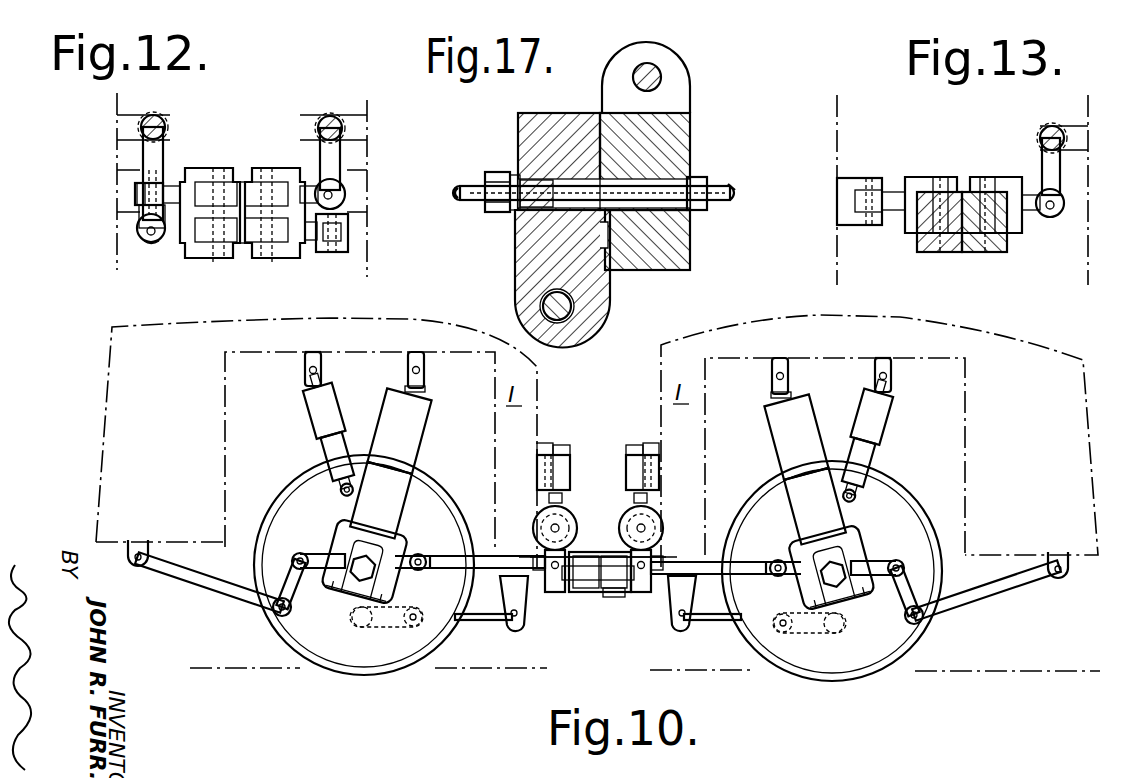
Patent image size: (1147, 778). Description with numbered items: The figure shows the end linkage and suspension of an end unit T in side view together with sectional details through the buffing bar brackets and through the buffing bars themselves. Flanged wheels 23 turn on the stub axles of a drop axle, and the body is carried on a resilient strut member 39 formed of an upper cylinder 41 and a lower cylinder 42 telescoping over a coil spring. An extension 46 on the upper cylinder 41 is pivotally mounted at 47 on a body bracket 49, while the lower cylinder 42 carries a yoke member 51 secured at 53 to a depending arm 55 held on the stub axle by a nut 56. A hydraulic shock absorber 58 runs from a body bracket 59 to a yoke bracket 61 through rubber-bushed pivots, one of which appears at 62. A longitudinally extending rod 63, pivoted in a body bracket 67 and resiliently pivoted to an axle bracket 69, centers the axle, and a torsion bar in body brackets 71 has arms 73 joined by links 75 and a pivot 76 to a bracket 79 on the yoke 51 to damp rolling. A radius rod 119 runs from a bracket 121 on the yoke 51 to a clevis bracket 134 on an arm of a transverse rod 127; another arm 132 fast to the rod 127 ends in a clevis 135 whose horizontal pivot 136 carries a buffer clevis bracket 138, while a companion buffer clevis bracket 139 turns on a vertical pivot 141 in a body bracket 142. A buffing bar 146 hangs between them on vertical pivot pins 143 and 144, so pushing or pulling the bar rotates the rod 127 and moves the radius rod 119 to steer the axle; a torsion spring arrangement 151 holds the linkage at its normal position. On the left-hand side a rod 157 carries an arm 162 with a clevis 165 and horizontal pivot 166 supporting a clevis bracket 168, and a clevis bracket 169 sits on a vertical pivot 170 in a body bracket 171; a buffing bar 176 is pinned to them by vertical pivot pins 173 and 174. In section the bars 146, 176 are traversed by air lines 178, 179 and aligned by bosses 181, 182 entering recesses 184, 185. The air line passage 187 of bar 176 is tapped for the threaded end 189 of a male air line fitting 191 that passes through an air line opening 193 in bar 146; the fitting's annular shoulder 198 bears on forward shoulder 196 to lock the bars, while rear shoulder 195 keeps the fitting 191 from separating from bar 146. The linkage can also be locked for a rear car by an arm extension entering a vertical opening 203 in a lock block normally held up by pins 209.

In FIG. 10, the flanged wheels 23 is at (447, 637).
In FIG. 10, the resilient strut member 39 is at (429, 439).
In FIG. 10, the upper cylinder 41 is at (425, 410).
In FIG. 10, the lower strut cylinder 42 is at (392, 512).
In FIG. 10, the extension 46 is at (408, 388).
In FIG. 10, the pivotal mounting 47 is at (424, 372).
In FIG. 10, the body bracket 49 is at (425, 348).
In FIG. 10, the yoke member 51 is at (353, 541).
In FIG. 10, the yoke-to-arm connection 53 is at (790, 616).
In FIG. 10, the depending arm 55 is at (360, 606).
In FIG. 10, the nut 56 is at (378, 574).
In FIG. 10, the hydraulic shock absorber 58 is at (306, 440).
In FIG. 10, the body bracket 59 is at (312, 352).
In FIG. 10, the yoke bracket 61 is at (343, 496).
In FIG. 10, the pivot pin 62 is at (305, 378).
In FIG. 10, the longitudinally extending rod 63 is at (356, 482).
In FIG. 10, the bracket 67 is at (520, 632).
In FIG. 10, the longitudinally extending bracket 69 is at (137, 568).
In FIG. 10, the body bracket 71 is at (140, 540).
In FIG. 10, the longitudinally extending arms 73 is at (207, 583).
In FIG. 10, the links 75 is at (291, 598).
In FIG. 10, the transverse horizontal pivot 76 is at (276, 614).
In FIG. 10, the horizontally extending bracket 79 is at (302, 554).
In FIG. 10, the radius rod 119 is at (480, 556).
In FIG. 10, the bracket 121 is at (420, 556).
In FIG. 12, the transversely extending horizontal rod 127 is at (159, 118).
In FIG. 10, the transversely extending horizontal rod 127 is at (548, 524).
In FIG. 12, the downwardly extending arm 132 is at (163, 150).
In FIG. 10, the clevis bracket 134 is at (532, 572).
In FIG. 12, the clevis 135 is at (138, 222).
In FIG. 10, the clevis 135 is at (550, 592).
In FIG. 12, the horizontal pivot 136 is at (150, 245).
In FIG. 12, the buffer clevis bracket 138 is at (195, 258).
In FIG. 10, the buffer clevis bracket 138 is at (578, 593).
In FIG. 12, the buffer clevis bracket 139 is at (196, 170).
In FIG. 13, the buffer clevis bracket 139 is at (915, 177).
In FIG. 12, the vertical pivot 141 is at (140, 183).
In FIG. 13, the vertical pivot 141 is at (868, 190).
In FIG. 12, the bracket 142 is at (135, 194).
In FIG. 13, the bracket 142 is at (850, 178).
In FIG. 12, the vertical pivot pin 143 is at (213, 262).
In FIG. 17, the vertical pivot pin 143 is at (540, 300).
In FIG. 12, the vertical pivot pin 144 is at (224, 168).
In FIG. 13, the vertical pivot pin 144 is at (943, 177).
In FIG. 12, the buffing bar 146 is at (228, 243).
In FIG. 17, the buffing bar 146 is at (530, 248).
In FIG. 13, the buffing bar 146 is at (935, 252).
In FIG. 10, the buffing bar 146 is at (590, 592).
In FIG. 10, the torsion spring arrangement 151 is at (562, 505).
In FIG. 12, the rod 157 is at (332, 117).
In FIG. 13, the rod 157 is at (1054, 126).
In FIG. 10, the rod 157 is at (650, 525).
In FIG. 12, the downwardly extending arm 162 is at (330, 152).
In FIG. 13, the downwardly extending arm 162 is at (1042, 160).
In FIG. 12, the clevis 165 is at (340, 186).
In FIG. 13, the clevis 165 is at (1064, 200).
In FIG. 10, the clevis 165 is at (652, 562).
In FIG. 12, the horizontal pivot 166 is at (345, 199).
In FIG. 12, the buffing bar supporting clevis bracket 168 is at (276, 168).
In FIG. 13, the buffing bar supporting clevis bracket 168 is at (1003, 177).
In FIG. 10, the buffing bar supporting clevis bracket 168 is at (605, 552).
In FIG. 12, the buffing bar supporting clevis bracket 169 is at (300, 258).
In FIG. 10, the buffing bar supporting clevis bracket 169 is at (612, 598).
In FIG. 12, the vertical pivot 170 is at (333, 252).
In FIG. 12, the body bracket 171 is at (352, 248).
In FIG. 12, the vertical pivot pin 173 is at (272, 262).
In FIG. 12, the vertical pivot pin 174 is at (265, 168).
In FIG. 17, the vertical pivot pin 174 is at (662, 79).
In FIG. 13, the vertical pivot pin 174 is at (1025, 222).
In FIG. 12, the buffing bar 176 is at (252, 243).
In FIG. 17, the buffing bar 176 is at (680, 150).
In FIG. 13, the buffing bar 176 is at (995, 252).
In FIG. 10, the buffing bar 176 is at (613, 592).
In FIG. 17, the air line 178 is at (475, 186).
In FIG. 17, the air line 179 is at (722, 186).
In FIG. 17, the registering boss 181 is at (600, 125).
In FIG. 17, the registering boss 182 is at (605, 246).
In FIG. 17, the recess 184 is at (600, 110).
In FIG. 17, the recess 185 is at (690, 246).
In FIG. 17, the air line passage 187 is at (698, 210).
In FIG. 17, the threaded end 189 is at (620, 185).
In FIG. 17, the male air line fitting 191 is at (500, 172).
In FIG. 17, the air line opening 193 is at (515, 175).
In FIG. 17, the rear shoulder 195 is at (522, 180).
In FIG. 17, the forward shoulder 196 is at (575, 150).
In FIG. 17, the annular shoulder 198 is at (560, 205).
In FIG. 10, the vertical opening 203 is at (570, 473).
In FIG. 10, the pins 209 is at (640, 445).